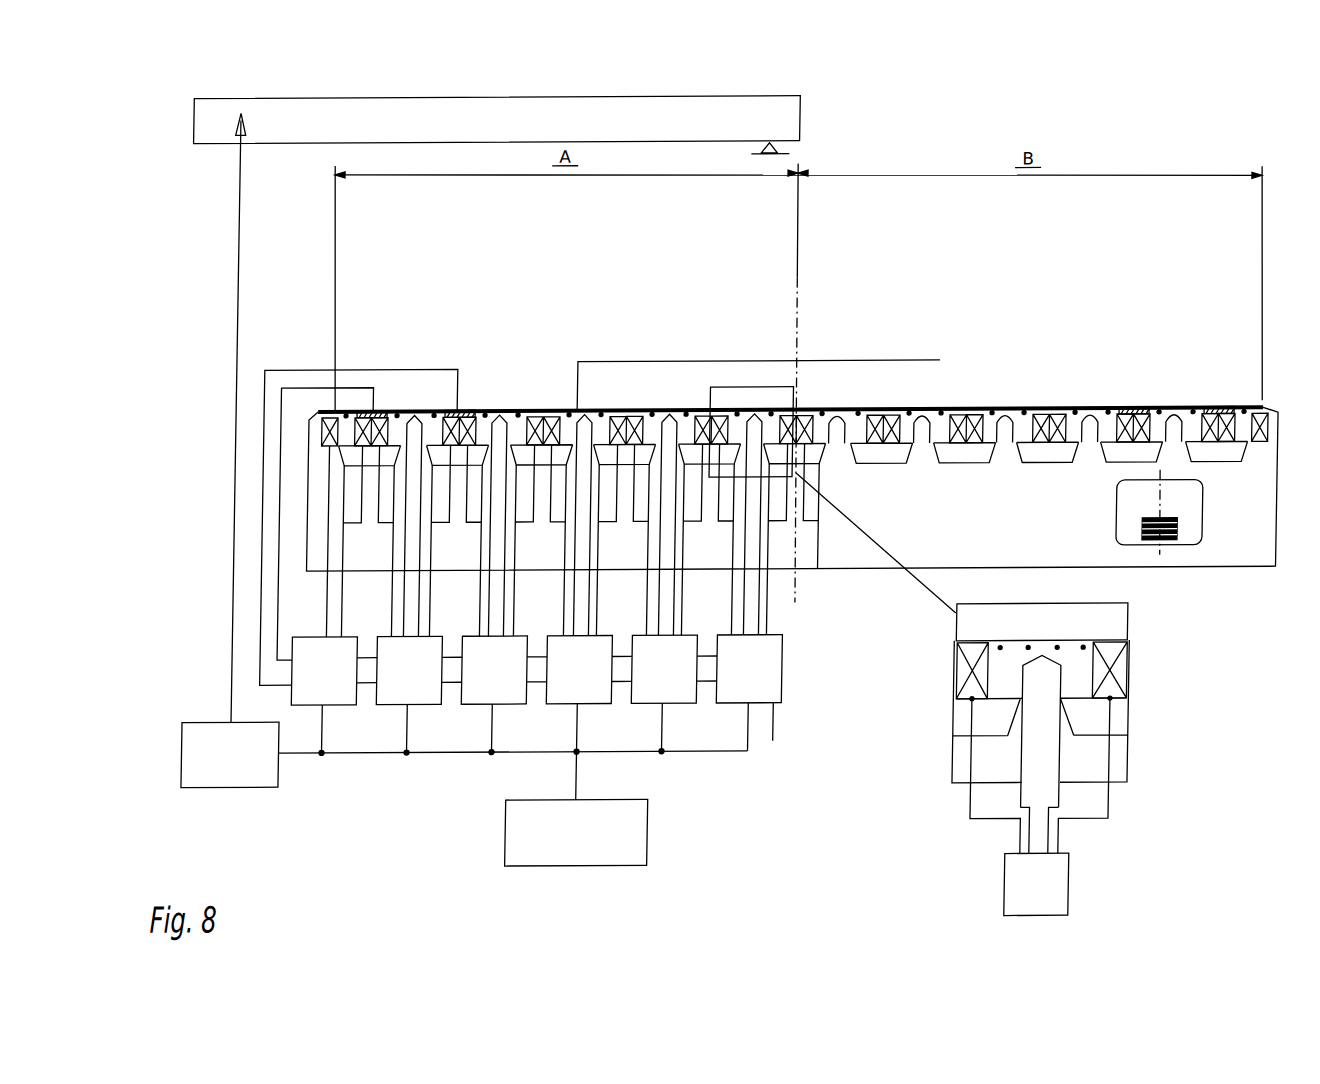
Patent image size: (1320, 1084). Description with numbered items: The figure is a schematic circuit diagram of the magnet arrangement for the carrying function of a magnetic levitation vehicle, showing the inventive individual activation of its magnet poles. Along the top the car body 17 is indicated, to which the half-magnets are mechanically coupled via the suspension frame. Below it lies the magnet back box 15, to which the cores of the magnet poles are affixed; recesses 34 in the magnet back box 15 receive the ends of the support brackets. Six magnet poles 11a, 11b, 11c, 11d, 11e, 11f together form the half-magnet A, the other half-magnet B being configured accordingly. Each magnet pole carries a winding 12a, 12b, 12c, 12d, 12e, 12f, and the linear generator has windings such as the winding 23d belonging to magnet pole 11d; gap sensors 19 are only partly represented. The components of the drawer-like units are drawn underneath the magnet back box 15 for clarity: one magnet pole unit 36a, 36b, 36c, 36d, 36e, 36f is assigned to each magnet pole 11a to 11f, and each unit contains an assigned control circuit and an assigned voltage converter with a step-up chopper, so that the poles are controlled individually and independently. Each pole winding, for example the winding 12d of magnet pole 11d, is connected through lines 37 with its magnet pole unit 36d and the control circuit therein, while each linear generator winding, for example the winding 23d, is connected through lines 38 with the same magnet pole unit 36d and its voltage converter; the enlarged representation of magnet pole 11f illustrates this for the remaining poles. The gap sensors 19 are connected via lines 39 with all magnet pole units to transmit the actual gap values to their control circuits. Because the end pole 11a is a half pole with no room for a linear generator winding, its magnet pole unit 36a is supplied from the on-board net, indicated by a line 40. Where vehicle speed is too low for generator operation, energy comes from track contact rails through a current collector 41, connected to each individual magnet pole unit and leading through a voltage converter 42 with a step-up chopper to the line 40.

The car body 17 is at (777, 128).
The line 40 is at (234, 513).
The lines 39 is at (280, 602).
The voltage converter 42 is at (268, 787).
The current collector 41 is at (657, 847).
The magnet pole unit 36a is at (350, 705).
The magnet pole unit 36b is at (435, 705).
The magnet pole unit 36c is at (520, 705).
The magnet pole unit 36d is at (605, 706).
The magnet pole unit 36e is at (687, 707).
The magnet pole unit 36f is at (778, 743).
The winding 12a is at (367, 412).
The winding 12b is at (445, 408).
The winding 12c is at (590, 410).
The winding 12d is at (678, 410).
The winding 12e is at (752, 410).
The winding 12f is at (800, 410).
The magnet pole 11a is at (343, 412).
The magnet pole 11b is at (400, 437).
The magnet pole 11c is at (517, 428).
The magnet pole 11d is at (598, 425).
The magnet pole 11e is at (687, 425).
The magnet pole 11f is at (768, 412).
The gap sensor 19 is at (474, 408).
The winding of the linear generator 23d is at (939, 363).
The recess 34 is at (1175, 549).
The magnet back box 15 is at (1240, 548).
The lines 37 is at (563, 577).
The lines 38 is at (580, 547).